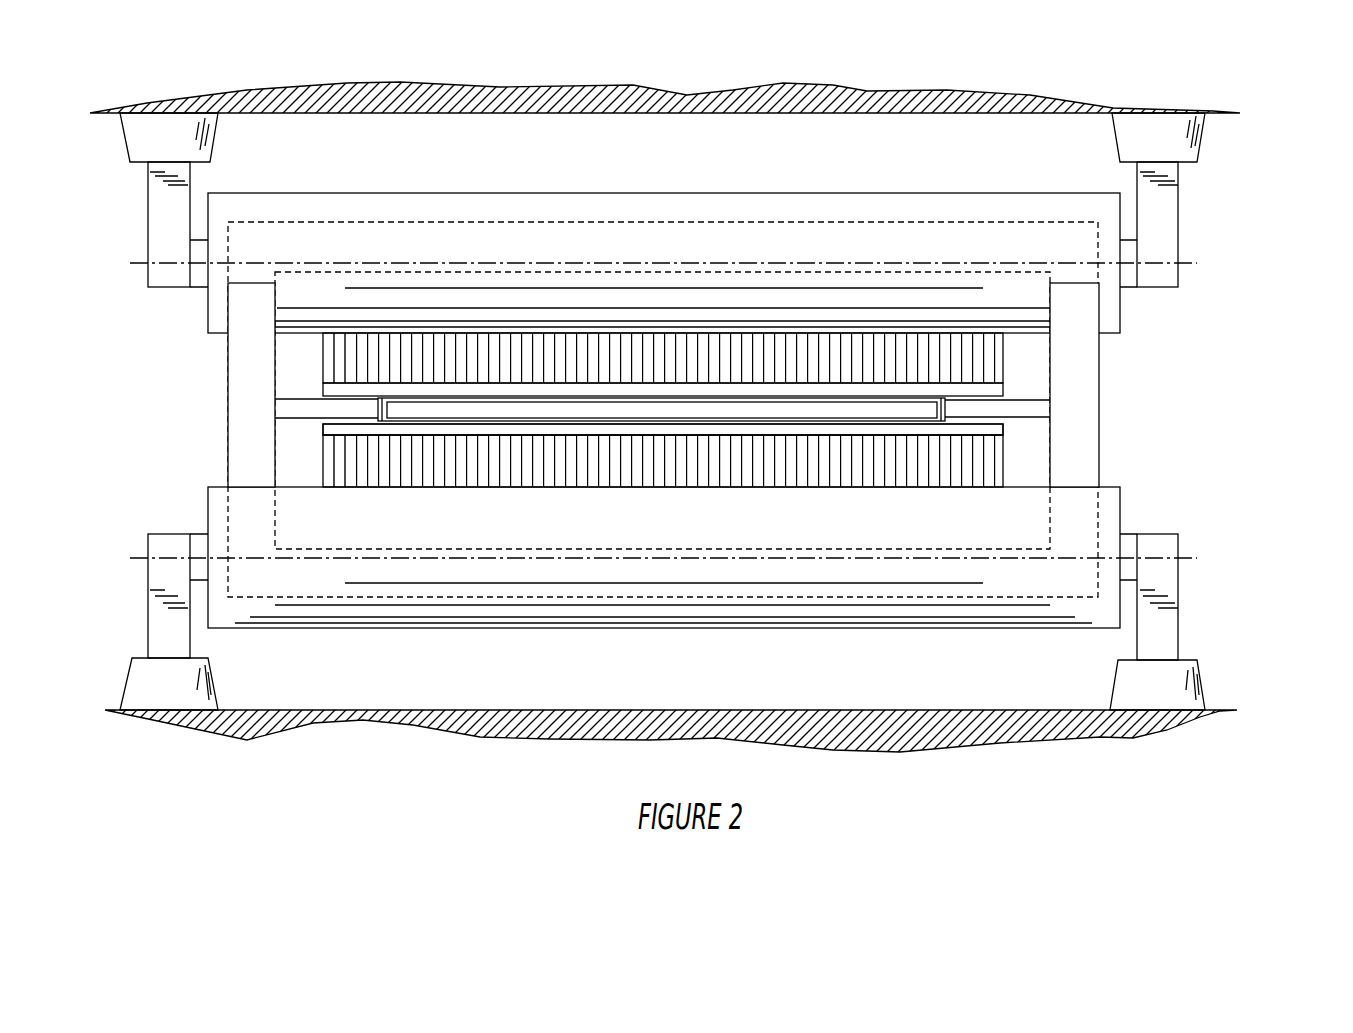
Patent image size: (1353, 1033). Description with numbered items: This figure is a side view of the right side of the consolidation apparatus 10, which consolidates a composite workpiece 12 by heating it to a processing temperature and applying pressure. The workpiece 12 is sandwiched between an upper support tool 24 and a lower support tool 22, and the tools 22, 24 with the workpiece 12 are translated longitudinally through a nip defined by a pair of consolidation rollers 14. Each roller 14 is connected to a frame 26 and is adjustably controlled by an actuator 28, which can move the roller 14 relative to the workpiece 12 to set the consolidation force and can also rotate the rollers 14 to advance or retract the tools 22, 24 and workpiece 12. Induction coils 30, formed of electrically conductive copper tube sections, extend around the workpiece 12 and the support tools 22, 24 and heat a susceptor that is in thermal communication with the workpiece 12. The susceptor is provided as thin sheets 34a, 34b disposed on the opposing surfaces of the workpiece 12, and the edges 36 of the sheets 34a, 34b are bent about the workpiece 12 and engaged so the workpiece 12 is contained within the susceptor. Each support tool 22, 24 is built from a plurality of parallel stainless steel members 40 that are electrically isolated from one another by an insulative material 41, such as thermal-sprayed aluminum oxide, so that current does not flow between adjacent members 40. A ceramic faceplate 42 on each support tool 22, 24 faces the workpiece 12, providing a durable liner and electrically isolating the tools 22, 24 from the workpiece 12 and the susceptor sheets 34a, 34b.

The consolidation apparatus 10 is at (1262, 133).
The composite workpiece 12 is at (903, 407).
The consolidation rollers 14 is at (1122, 313).
The support tool 22 is at (1003, 453).
The support tool 24 is at (785, 398).
The frame 26 is at (500, 113).
The actuators 28 is at (122, 122).
The induction coils 30 is at (1100, 478).
The susceptor sheet 34a is at (743, 422).
The susceptor sheet 34b is at (947, 376).
The edges of the sheets 36 is at (376, 412).
The members 40 is at (320, 353).
The insulative material 41 is at (339, 342).
The faceplate 42 is at (320, 390).